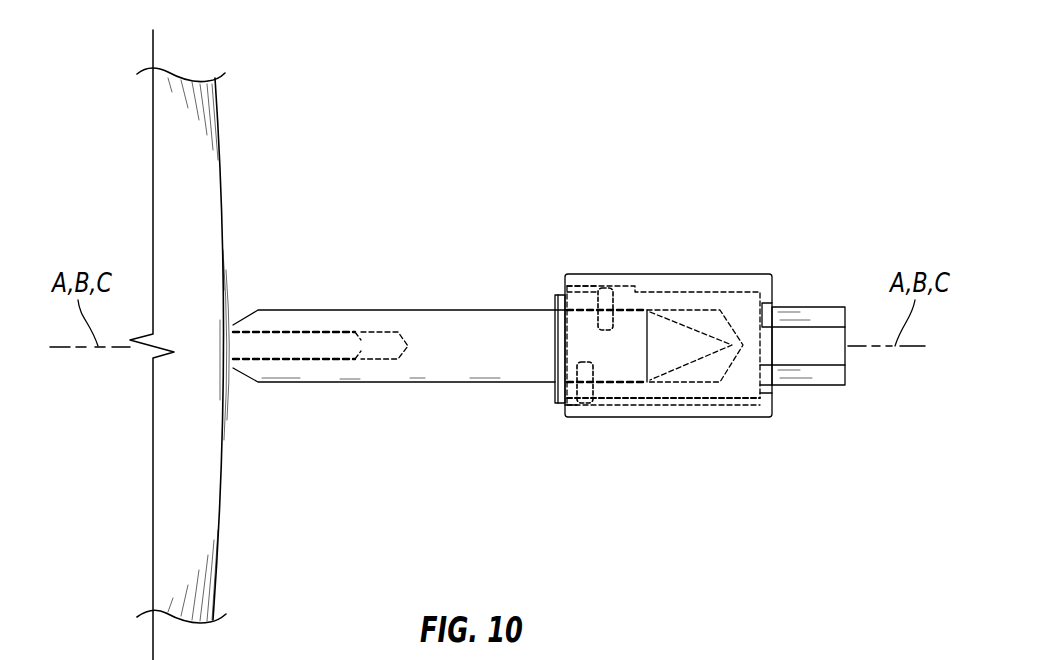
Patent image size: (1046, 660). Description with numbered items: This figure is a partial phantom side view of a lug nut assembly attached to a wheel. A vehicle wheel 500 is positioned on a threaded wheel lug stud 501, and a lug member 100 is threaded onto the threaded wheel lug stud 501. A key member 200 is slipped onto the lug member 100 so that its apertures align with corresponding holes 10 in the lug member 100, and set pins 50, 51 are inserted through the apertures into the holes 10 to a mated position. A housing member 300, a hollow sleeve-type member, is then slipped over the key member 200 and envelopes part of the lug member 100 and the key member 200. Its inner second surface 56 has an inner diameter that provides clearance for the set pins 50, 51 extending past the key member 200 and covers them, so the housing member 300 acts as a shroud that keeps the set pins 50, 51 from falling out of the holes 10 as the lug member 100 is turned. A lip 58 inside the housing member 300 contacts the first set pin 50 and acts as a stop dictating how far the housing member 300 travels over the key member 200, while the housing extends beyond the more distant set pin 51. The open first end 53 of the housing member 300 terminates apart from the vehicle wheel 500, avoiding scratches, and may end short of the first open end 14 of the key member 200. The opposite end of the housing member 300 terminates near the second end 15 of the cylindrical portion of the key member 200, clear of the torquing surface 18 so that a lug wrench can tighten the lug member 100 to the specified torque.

The vehicle wheel 500 is at (226, 185).
The threaded wheel lug stud 501 is at (318, 338).
The lug member 100 is at (381, 383).
The housing member 300 is at (737, 274).
The first open end 14 is at (555, 300).
The key member 200 is at (738, 401).
The lip 58 is at (636, 401).
The holes 10 is at (612, 324).
The first set pin 50 is at (604, 290).
The set pin 51 is at (590, 404).
The second surface 56 is at (587, 288).
The first end 53 is at (565, 407).
The second end of the cylindrical portion 15 is at (773, 393).
The torquing surface 18 is at (822, 312).